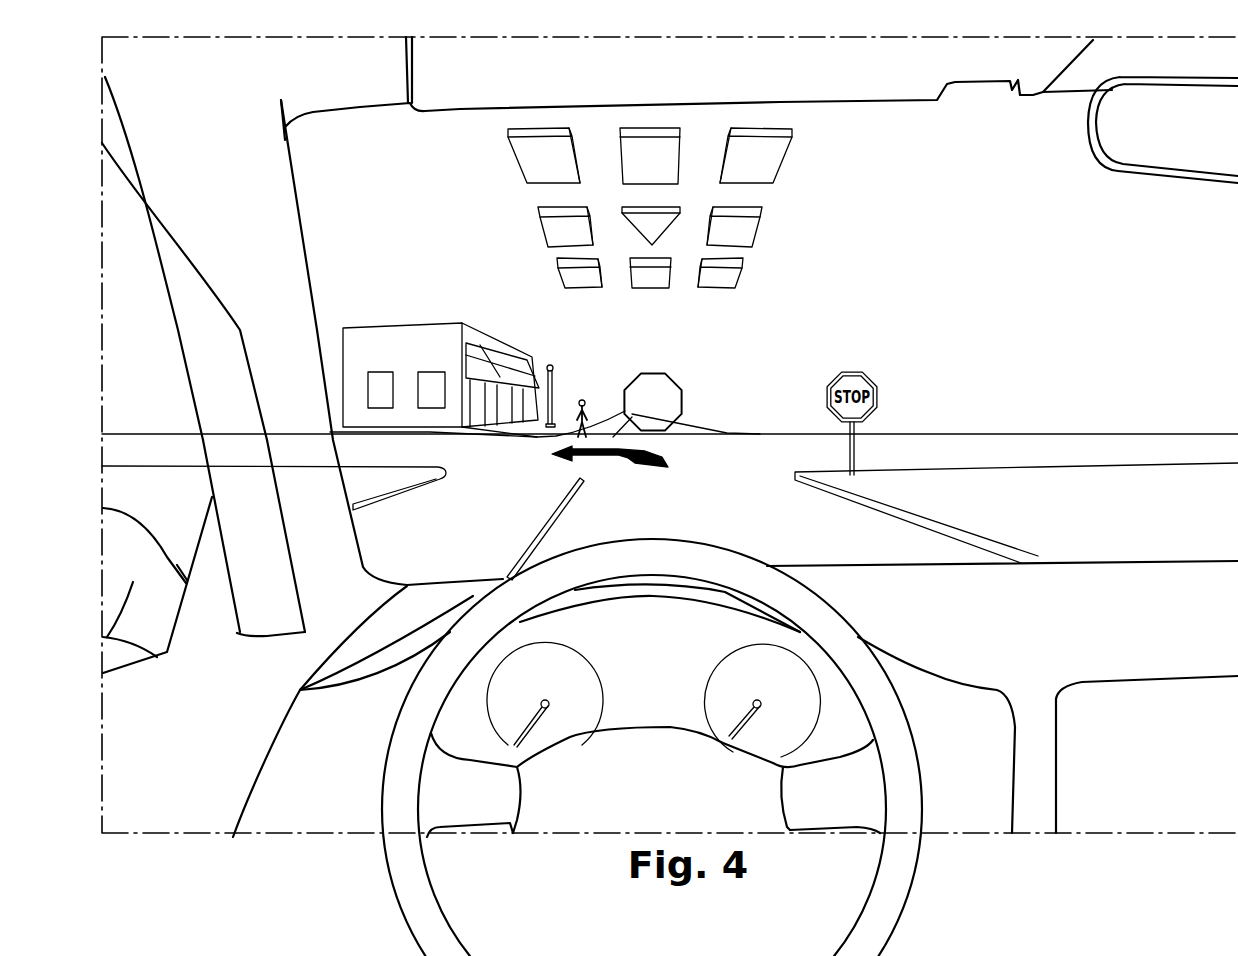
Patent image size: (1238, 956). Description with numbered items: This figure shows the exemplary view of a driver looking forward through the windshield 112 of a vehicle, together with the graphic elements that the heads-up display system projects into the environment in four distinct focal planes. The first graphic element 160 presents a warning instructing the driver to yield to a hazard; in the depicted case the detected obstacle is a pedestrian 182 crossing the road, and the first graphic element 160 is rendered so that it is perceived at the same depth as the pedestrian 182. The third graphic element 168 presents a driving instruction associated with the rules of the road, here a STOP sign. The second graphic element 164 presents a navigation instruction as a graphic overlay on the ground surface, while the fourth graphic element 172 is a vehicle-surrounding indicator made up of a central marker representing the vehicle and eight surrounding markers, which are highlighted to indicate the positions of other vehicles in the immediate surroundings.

The windshield 112 is at (1017, 314).
The first graphic element 160 is at (568, 392).
The second graphic element 164 is at (685, 437).
The third graphic element 168 is at (686, 372).
The fourth graphic element 172 is at (804, 195).
The pedestrian 182 is at (568, 424).